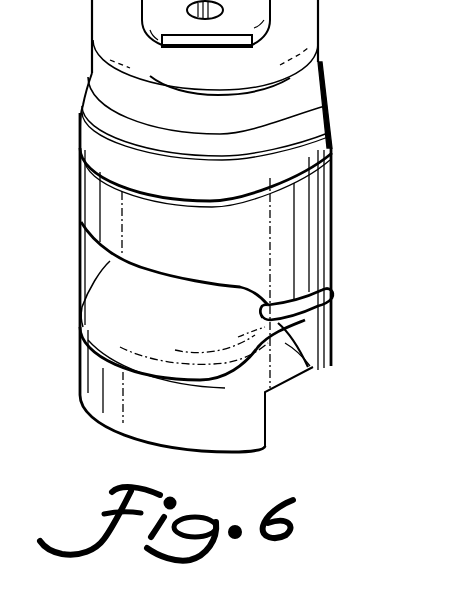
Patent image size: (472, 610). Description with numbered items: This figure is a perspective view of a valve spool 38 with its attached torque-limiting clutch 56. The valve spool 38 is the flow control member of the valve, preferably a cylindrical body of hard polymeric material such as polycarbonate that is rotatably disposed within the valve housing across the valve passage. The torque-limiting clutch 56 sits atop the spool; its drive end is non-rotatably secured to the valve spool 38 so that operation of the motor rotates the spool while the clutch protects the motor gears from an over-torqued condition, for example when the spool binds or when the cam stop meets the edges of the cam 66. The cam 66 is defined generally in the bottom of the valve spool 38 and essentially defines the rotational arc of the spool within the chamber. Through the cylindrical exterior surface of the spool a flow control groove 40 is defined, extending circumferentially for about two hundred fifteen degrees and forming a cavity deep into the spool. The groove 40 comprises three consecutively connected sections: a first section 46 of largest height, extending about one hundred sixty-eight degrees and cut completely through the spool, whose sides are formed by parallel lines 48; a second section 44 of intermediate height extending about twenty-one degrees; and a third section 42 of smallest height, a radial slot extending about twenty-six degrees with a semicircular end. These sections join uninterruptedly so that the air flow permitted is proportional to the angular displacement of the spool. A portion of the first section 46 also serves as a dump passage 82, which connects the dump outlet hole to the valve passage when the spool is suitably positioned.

The torque-limiting clutch 56 is at (322, 62).
The valve spool 38 is at (336, 197).
The dump passage 82 is at (107, 330).
The parallel lines 48 is at (160, 228).
The first section 46 is at (247, 252).
The flow control groove 40 is at (258, 317).
The third section 42 is at (332, 296).
The second section 44 is at (308, 367).
The cam 66 is at (267, 416).